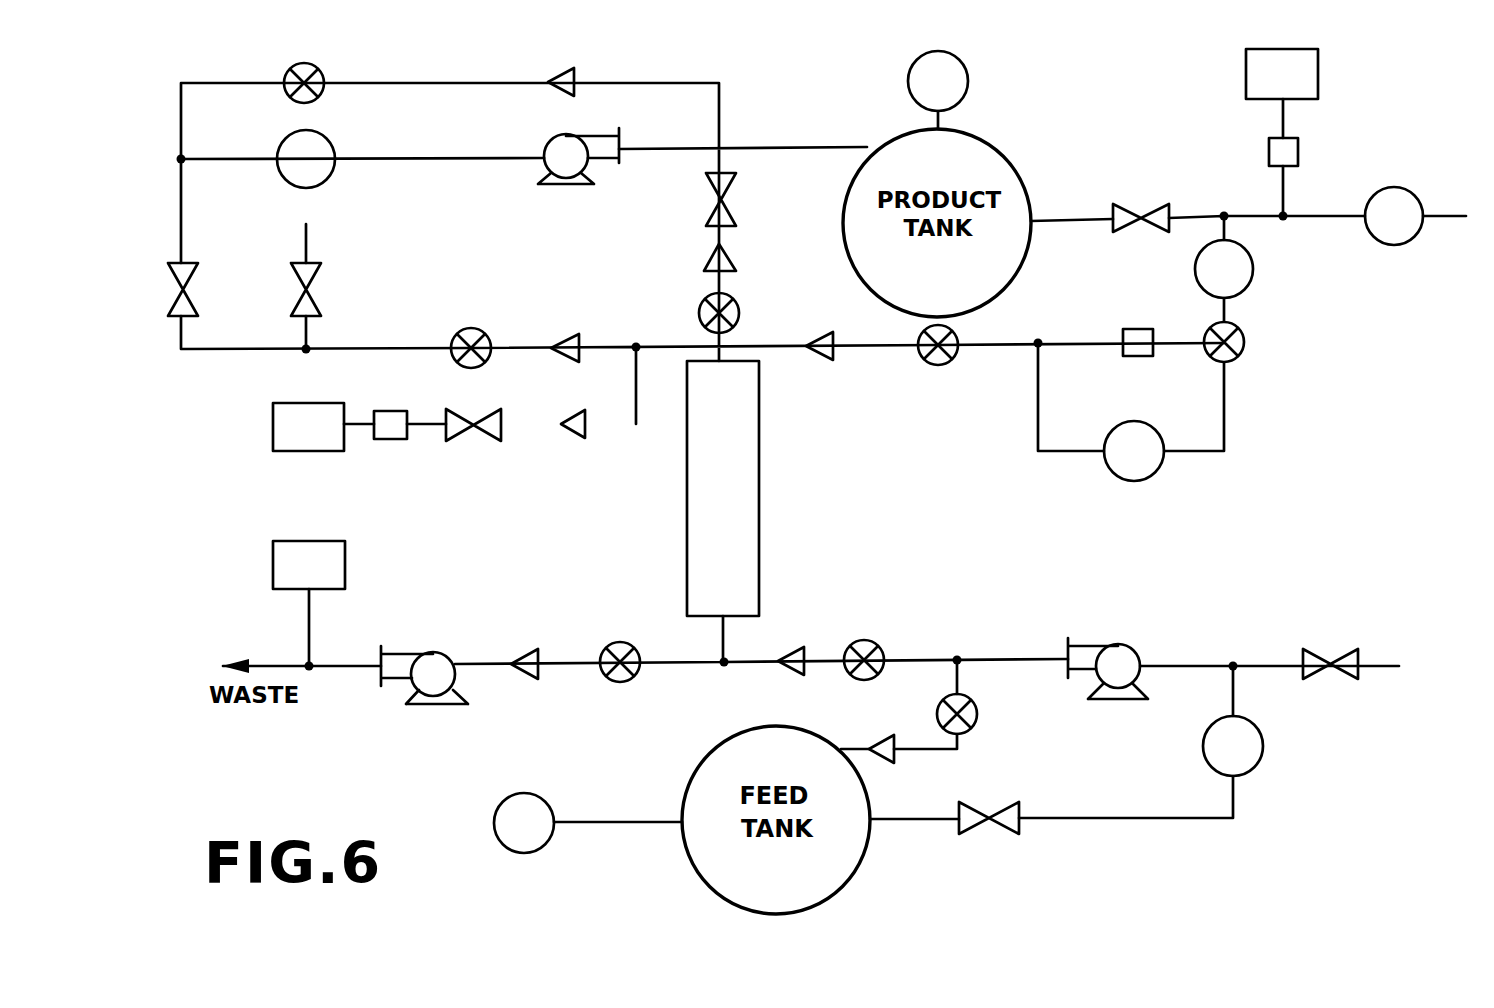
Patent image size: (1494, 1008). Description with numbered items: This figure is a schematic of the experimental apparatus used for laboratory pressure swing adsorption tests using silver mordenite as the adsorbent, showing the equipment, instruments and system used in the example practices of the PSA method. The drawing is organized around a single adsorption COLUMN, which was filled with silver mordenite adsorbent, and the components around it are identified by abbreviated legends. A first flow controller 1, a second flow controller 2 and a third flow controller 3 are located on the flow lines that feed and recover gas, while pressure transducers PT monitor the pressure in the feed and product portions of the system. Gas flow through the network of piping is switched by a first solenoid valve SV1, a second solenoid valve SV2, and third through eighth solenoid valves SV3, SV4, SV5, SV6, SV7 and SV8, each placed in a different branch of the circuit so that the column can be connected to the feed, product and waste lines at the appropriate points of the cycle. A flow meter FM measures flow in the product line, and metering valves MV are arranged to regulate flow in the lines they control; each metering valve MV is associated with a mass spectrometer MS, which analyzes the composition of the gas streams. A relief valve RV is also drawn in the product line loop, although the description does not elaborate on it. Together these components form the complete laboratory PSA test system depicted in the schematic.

The first flow controller 1 is at (1239, 752).
The second flow controller 2 is at (314, 168).
The third flow controller 3 is at (1403, 223).
The first solenoid valve SV1 is at (753, 313).
The second solenoid valve SV2 is at (476, 331).
The third solenoid valve SV3 is at (336, 89).
The fourth solenoid valve SV4 is at (941, 362).
The fifth solenoid valve SV5 is at (1253, 352).
The sixth solenoid valve SV6 is at (627, 679).
The seventh solenoid valve SV7 is at (871, 677).
The eighth solenoid valve SV8 is at (986, 724).
The flow meter FM is at (1224, 269).
The relief valve RV is at (1134, 451).
The pressure transducer PT is at (731, 452).
The mass spectrometer MS is at (795, 319).
The metering valve MV is at (856, 288).
The column COLUMN is at (758, 512).